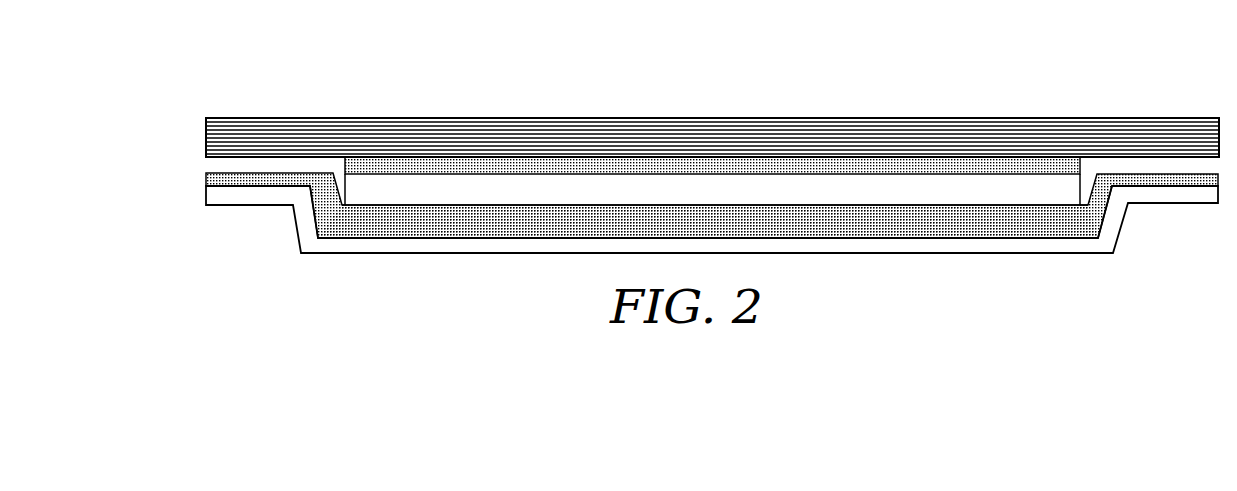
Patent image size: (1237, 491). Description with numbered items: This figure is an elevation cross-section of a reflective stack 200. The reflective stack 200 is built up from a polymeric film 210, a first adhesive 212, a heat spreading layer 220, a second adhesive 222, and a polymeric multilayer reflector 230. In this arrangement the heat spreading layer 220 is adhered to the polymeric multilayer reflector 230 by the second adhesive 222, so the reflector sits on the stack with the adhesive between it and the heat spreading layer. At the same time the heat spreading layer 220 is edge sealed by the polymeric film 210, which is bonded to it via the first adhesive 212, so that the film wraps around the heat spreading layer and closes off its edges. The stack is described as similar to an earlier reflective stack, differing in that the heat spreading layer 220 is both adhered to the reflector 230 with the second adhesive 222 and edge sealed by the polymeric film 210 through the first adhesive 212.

The reflective stack 200 is at (235, 53).
The polymeric multilayer reflector 230 is at (206, 119).
The second adhesive 222 is at (347, 164).
The heat spreading layer 220 is at (1055, 190).
The first adhesive 212 is at (1028, 222).
The polymeric film 210 is at (948, 243).